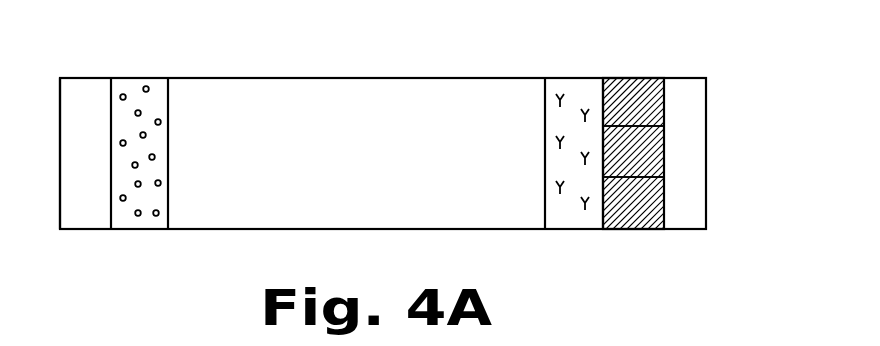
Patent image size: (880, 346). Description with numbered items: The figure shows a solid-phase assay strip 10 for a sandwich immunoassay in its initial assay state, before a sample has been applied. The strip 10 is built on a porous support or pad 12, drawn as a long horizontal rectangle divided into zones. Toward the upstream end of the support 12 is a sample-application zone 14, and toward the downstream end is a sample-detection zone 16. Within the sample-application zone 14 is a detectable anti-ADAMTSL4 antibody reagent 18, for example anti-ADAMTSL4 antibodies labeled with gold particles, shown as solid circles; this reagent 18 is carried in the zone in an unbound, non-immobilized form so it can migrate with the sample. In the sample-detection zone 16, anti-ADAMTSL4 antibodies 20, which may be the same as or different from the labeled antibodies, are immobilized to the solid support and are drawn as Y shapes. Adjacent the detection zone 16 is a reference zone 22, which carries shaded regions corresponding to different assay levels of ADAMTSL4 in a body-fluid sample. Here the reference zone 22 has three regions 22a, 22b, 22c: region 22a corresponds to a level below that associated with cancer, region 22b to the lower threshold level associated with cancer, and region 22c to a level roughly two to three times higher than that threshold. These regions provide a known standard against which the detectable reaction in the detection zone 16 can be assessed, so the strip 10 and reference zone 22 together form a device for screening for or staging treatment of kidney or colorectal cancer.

The assay strip 10 is at (381, 77).
The porous support 12 is at (249, 225).
The sample-application zone 14 is at (118, 225).
The sample-detection zone 16 is at (558, 225).
The detectable anti-ADAMTSL4 antibody reagent 18 is at (123, 94).
The immobilized anti-ADAMTSL4 antibodies 20 is at (585, 107).
The reference zone 22 is at (708, 120).
The first reference region 22a is at (665, 100).
The second reference region 22b is at (665, 150).
The third reference region 22c is at (665, 202).